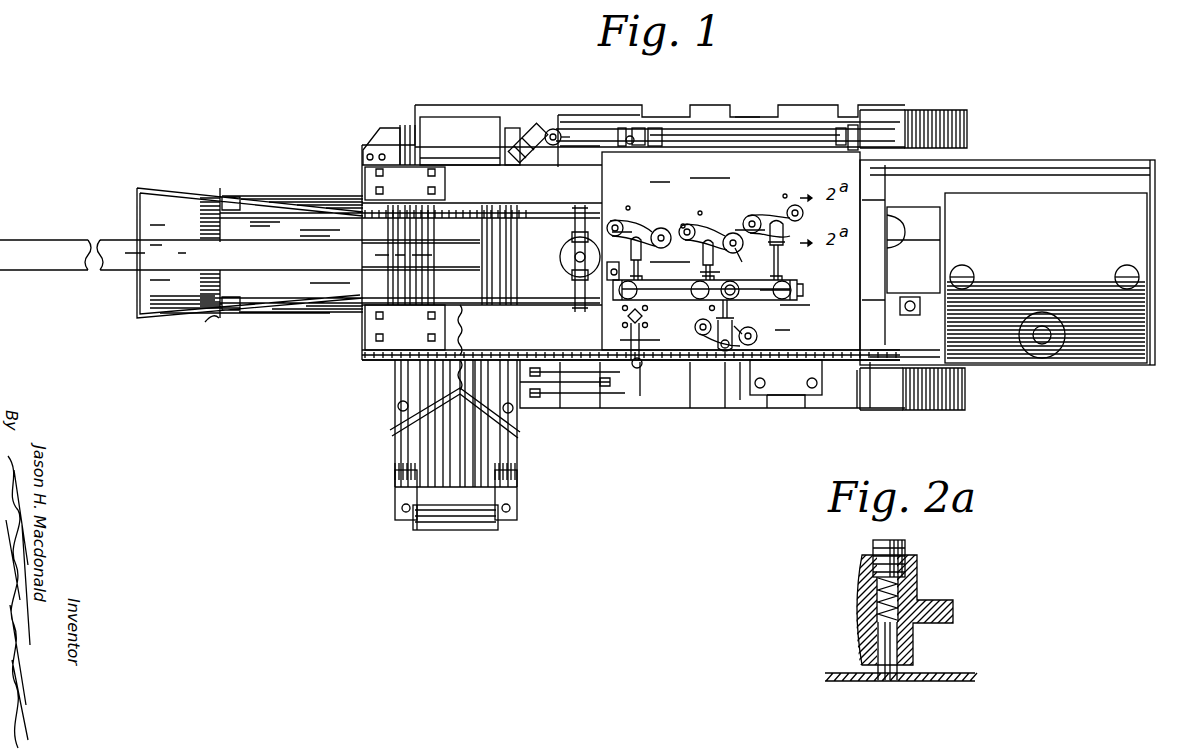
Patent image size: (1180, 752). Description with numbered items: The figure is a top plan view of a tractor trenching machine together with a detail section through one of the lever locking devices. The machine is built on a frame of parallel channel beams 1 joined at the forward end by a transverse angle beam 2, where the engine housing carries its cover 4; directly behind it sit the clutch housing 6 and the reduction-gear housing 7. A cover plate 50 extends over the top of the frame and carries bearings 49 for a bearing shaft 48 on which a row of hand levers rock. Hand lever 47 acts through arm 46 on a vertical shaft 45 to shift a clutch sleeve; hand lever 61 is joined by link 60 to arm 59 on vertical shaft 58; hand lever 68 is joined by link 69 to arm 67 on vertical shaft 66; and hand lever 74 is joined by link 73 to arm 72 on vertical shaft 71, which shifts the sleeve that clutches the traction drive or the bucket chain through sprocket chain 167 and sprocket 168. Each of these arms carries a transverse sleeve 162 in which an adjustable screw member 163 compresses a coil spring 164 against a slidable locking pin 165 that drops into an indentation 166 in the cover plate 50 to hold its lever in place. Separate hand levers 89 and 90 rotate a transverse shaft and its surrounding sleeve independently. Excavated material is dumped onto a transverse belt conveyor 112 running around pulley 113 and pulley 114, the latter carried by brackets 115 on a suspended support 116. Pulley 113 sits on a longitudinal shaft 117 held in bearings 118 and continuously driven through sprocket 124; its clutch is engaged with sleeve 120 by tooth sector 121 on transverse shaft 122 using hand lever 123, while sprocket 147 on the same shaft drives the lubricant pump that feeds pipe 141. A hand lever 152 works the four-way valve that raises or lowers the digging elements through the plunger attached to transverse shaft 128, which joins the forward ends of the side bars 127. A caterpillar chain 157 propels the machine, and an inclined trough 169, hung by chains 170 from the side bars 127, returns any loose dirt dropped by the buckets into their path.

In FIG. 1, the channel beams 1 is at (1095, 166).
In FIG. 1, the transverse angle beam 2 is at (1152, 366).
In FIG. 1, the cover 4 is at (1035, 206).
In FIG. 1, the clutch housing 6 is at (910, 250).
In FIG. 1, the housing 7 is at (873, 255).
In FIG. 1, the vertical shaft 45 is at (668, 236).
In FIG. 1, the arm 46 is at (643, 236).
In FIG. 1, the hand lever 47 is at (626, 316).
In FIG. 1, the bearing shaft 48 is at (668, 300).
In FIG. 1, the bearings 49 is at (611, 286).
In FIG. 1, the cover plate 50 is at (731, 251).
In FIG. 2A, the cover plate 50 is at (846, 680).
In FIG. 1, the vertical shaft 58 is at (750, 258).
In FIG. 1, the arm 59 is at (718, 238).
In FIG. 1, the link 60 is at (704, 264).
In FIG. 1, the hand lever 61 is at (695, 296).
In FIG. 1, the vertical shaft 66 is at (752, 215).
In FIG. 1, the arm 67 is at (776, 222).
In FIG. 1, the hand lever 68 is at (812, 282).
In FIG. 1, the link 69 is at (780, 266).
In FIG. 1, the vertical shaft 71 is at (758, 336).
In FIG. 1, the arm 72 is at (747, 323).
In FIG. 1, the link 73 is at (716, 316).
In FIG. 1, the hand lever 74 is at (732, 284).
In FIG. 1, the hand lever 89 is at (582, 397).
In FIG. 1, the hand lever 90 is at (602, 397).
In FIG. 1, the transverse belt conveyor 112 is at (462, 512).
In FIG. 1, the pulley 113 is at (488, 117).
In FIG. 1, the pulley 114 is at (497, 528).
In FIG. 1, the brackets 115 is at (518, 499).
In FIG. 1, the suspended support 116 is at (518, 432).
In FIG. 1, the longitudinal shaft 117 is at (782, 130).
In FIG. 1, the bearings 118 is at (520, 126).
In FIG. 1, the sleeve 120 is at (637, 128).
In FIG. 1, the tooth sector 121 is at (603, 143).
In FIG. 1, the transverse shaft 122 is at (631, 345).
In FIG. 1, the hand lever 123 is at (560, 397).
In FIG. 1, the sprocket 124 is at (850, 125).
In FIG. 1, the side bars 127 is at (530, 213).
In FIG. 1, the transverse shaft 128 is at (572, 240).
In FIG. 1, the pipe 141 is at (562, 130).
In FIG. 1, the sprocket 147 is at (638, 134).
In FIG. 1, the hand lever 152 is at (640, 330).
In FIG. 1, the caterpillar chain 157 is at (742, 114).
In FIG. 1, the transverse sleeve 162 is at (684, 224).
In FIG. 2A, the transverse sleeve 162 is at (860, 597).
In FIG. 2A, the adjustable screw member 163 is at (900, 558).
In FIG. 2A, the coil spring 164 is at (900, 597).
In FIG. 2A, the locking pin 165 is at (912, 650).
In FIG. 1, the indentation 166 is at (786, 194).
In FIG. 1, the sprocket chain 167 is at (742, 362).
In FIG. 1, the sprocket 168 is at (383, 362).
In FIG. 1, the inclined trough 169 is at (180, 200).
In FIG. 1, the chains 170 is at (208, 325).